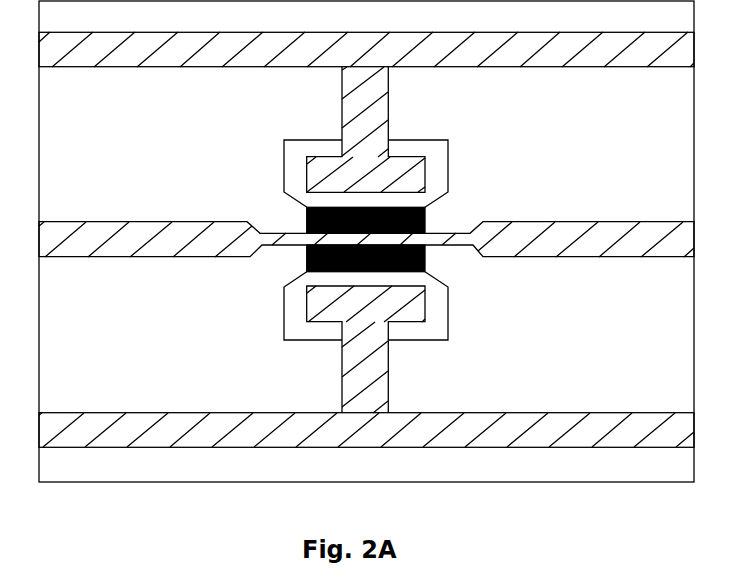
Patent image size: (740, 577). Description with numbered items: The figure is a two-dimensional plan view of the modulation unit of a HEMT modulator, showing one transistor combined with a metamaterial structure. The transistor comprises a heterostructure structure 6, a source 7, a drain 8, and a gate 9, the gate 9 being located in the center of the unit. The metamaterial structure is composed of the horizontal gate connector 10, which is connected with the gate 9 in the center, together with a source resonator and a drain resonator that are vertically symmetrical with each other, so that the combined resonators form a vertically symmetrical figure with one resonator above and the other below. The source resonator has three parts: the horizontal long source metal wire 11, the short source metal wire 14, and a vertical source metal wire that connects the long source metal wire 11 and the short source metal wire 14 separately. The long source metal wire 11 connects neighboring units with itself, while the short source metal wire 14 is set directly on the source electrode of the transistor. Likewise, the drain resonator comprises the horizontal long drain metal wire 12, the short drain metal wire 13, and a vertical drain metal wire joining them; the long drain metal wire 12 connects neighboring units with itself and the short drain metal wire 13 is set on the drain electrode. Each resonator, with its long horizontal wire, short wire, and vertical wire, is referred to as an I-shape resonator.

The heterostructure structure 6 is at (302, 290).
The source 7 is at (440, 163).
The drain 8 is at (430, 329).
The gate 9 is at (415, 261).
The gate connector 10 is at (73, 238).
The long source metal wire 11 is at (73, 50).
The long drain metal wire 12 is at (657, 442).
The short drain metal wire 13 is at (318, 310).
The short source metal wire 14 is at (318, 167).